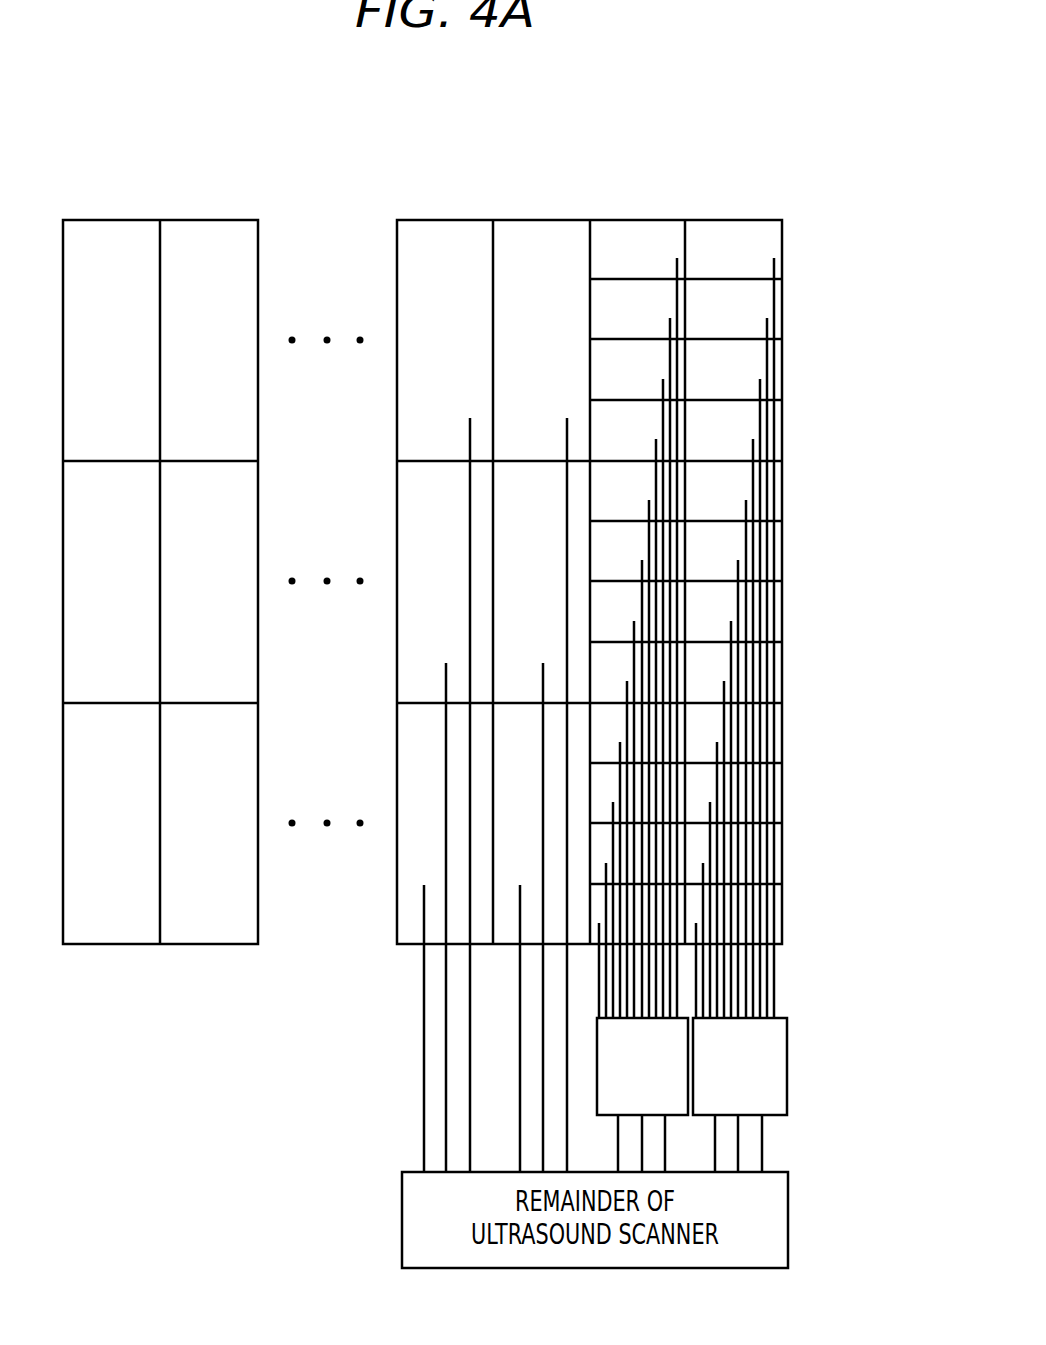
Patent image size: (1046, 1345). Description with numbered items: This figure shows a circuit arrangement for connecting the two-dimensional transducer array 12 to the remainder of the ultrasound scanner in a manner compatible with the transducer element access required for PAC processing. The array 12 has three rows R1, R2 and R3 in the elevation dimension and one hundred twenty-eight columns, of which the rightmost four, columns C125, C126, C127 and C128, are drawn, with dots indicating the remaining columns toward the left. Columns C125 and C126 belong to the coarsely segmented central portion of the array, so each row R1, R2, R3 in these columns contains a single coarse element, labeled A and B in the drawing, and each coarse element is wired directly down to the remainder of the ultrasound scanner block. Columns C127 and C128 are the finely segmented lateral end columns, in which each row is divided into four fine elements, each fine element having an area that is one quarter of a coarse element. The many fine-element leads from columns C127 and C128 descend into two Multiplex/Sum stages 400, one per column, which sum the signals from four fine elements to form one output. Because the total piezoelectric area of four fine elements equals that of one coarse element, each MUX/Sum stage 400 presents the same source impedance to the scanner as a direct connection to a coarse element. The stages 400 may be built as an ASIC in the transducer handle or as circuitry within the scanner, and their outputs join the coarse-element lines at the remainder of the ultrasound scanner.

The transducer array 12 is at (316, 178).
The column C125 is at (447, 218).
The column C126 is at (537, 218).
The column C127 is at (642, 218).
The column C128 is at (737, 218).
The row R1 is at (803, 217).
The row R2 is at (803, 462).
The row R3 is at (803, 705).
The MUX/Sum stage 400 is at (597, 1046).